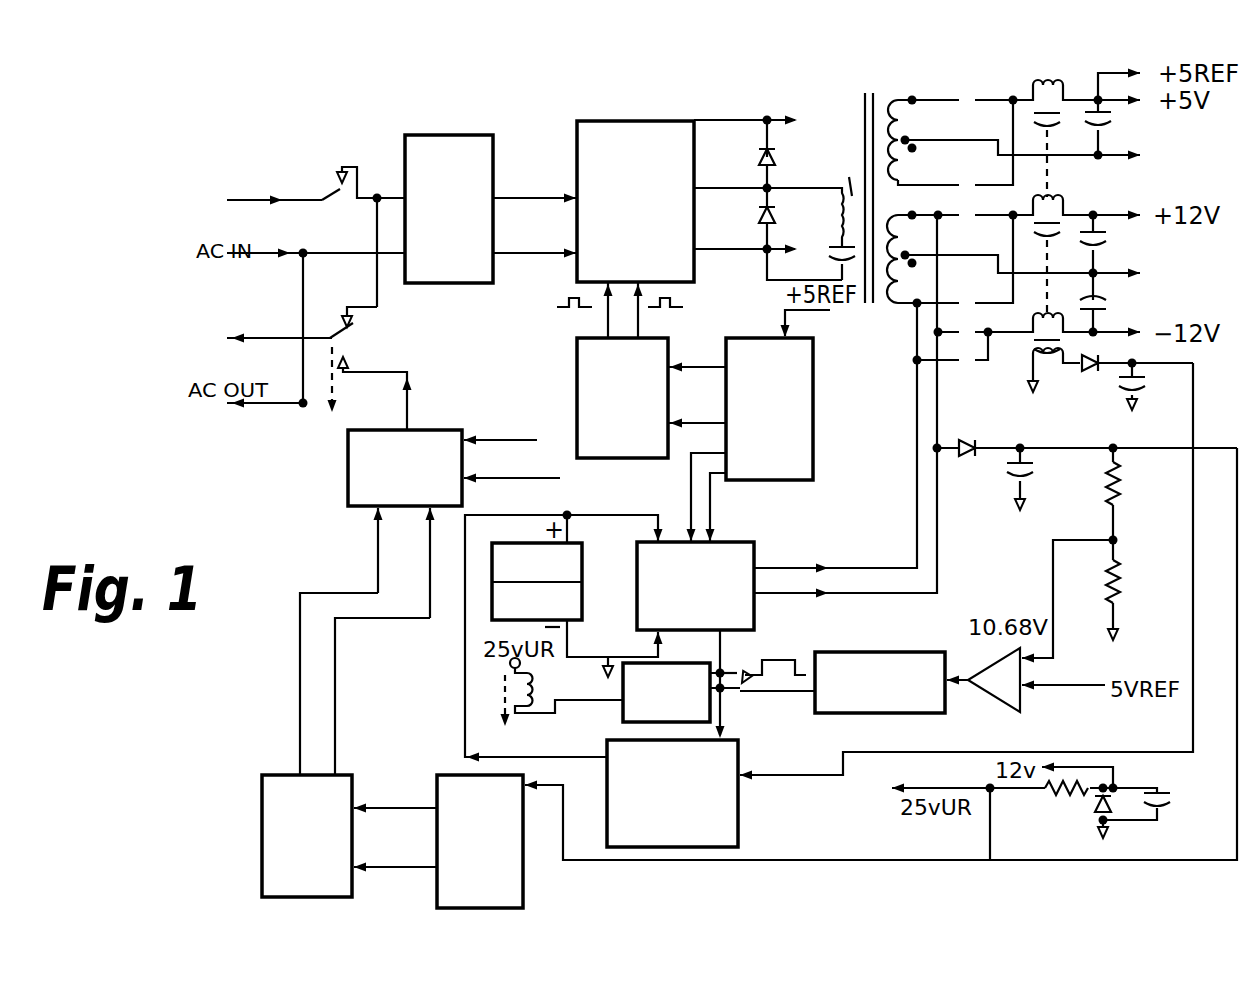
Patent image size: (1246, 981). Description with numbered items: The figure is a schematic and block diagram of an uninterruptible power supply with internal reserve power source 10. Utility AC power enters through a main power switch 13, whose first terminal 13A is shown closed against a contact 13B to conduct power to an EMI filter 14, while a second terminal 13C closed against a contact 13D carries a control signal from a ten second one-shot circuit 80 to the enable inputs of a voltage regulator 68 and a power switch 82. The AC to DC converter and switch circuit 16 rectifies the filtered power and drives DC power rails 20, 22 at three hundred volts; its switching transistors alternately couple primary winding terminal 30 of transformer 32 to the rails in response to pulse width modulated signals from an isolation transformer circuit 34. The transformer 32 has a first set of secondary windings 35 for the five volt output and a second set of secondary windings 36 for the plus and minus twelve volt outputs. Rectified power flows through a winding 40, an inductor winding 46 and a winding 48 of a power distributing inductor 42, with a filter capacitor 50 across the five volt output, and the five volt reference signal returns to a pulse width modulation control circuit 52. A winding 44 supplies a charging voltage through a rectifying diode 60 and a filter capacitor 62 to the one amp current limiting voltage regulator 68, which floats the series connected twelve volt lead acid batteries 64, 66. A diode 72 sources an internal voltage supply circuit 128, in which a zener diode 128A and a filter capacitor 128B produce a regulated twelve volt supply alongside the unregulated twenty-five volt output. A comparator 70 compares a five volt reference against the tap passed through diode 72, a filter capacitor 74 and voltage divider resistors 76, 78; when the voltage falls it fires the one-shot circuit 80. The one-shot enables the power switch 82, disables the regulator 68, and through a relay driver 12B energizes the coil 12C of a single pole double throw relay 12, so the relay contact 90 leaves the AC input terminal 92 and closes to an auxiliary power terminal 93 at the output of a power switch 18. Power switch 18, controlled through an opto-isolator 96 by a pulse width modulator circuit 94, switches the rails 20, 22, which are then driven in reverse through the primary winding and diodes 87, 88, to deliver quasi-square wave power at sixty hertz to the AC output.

The uninterruptible power supply with internal reserve power source 10 is at (530, 104).
The single pole double throw relay 12 is at (311, 316).
The main power switch 13 is at (305, 162).
The first terminal 13A is at (313, 196).
The contact 13B is at (336, 175).
The second terminal 13C is at (742, 688).
The contact 13D is at (746, 675).
The EMI filter 14 is at (445, 130).
The AC to DC converter and switch circuit 16 is at (640, 118).
The power switch 18 is at (436, 427).
The DC power rail 20 is at (770, 115).
The DC power rail 22 is at (737, 250).
The primary winding terminal 30 is at (787, 186).
The transformer 32 is at (892, 94).
The isolation transformer circuit 34 is at (575, 350).
The first set of secondary windings 35 is at (900, 97).
The second set of secondary windings 36 is at (883, 303).
The winding 40 is at (1037, 87).
The power distributing inductor 42 is at (1049, 84).
The winding 44 is at (1051, 360).
The inductor winding 46 is at (1063, 200).
The winding 48 is at (1032, 322).
The filter capacitor 50 is at (1103, 128).
The TL 494 pulse width modulation control circuit 52 is at (818, 403).
The rectifying diode 60 is at (1094, 350).
The filter capacitor 62 is at (1143, 400).
The 12 volt lead acid battery 64 is at (582, 570).
The 12 volt lead acid battery 66 is at (582, 607).
The one amp current limiting voltage regulator 68 is at (738, 827).
The comparator 70 is at (982, 698).
The diode 72 is at (965, 437).
The filter capacitor 74 is at (1028, 485).
The voltage divider resistor 76 is at (1128, 503).
The voltage divider resistor 78 is at (1102, 602).
The 10 second one-shot circuit 80 is at (843, 650).
The power switch 82 is at (730, 541).
The diode 87 is at (783, 153).
The diode 88 is at (783, 215).
The relay contact 90 is at (332, 328).
The AC input terminal 92 is at (370, 309).
The auxiliary power terminal 93 is at (353, 368).
The TL 494 pulse width modulator circuit 94 is at (523, 893).
The opto-isolator 96 is at (352, 775).
The voltage supply circuit 128 is at (925, 873).
The zener diode 128A is at (1097, 808).
The filter capacitor 128B is at (1173, 802).
The relay driver 12B is at (618, 707).
The relay coil 12C is at (532, 688).